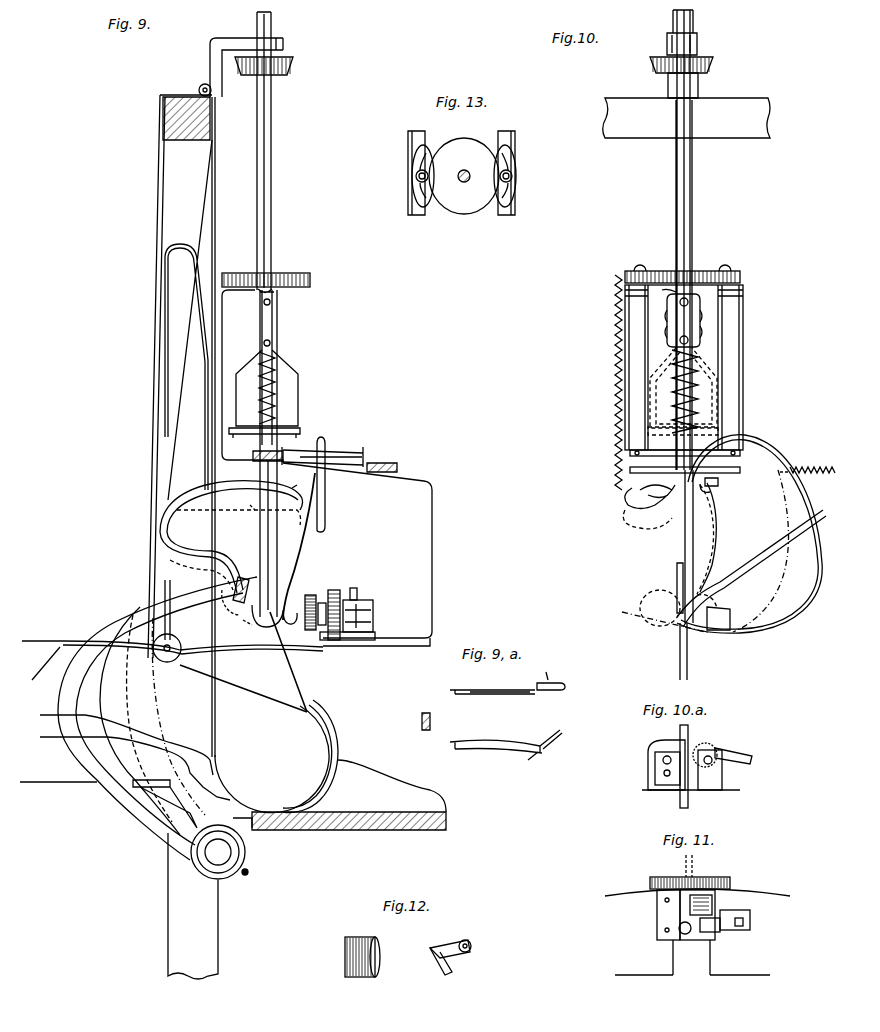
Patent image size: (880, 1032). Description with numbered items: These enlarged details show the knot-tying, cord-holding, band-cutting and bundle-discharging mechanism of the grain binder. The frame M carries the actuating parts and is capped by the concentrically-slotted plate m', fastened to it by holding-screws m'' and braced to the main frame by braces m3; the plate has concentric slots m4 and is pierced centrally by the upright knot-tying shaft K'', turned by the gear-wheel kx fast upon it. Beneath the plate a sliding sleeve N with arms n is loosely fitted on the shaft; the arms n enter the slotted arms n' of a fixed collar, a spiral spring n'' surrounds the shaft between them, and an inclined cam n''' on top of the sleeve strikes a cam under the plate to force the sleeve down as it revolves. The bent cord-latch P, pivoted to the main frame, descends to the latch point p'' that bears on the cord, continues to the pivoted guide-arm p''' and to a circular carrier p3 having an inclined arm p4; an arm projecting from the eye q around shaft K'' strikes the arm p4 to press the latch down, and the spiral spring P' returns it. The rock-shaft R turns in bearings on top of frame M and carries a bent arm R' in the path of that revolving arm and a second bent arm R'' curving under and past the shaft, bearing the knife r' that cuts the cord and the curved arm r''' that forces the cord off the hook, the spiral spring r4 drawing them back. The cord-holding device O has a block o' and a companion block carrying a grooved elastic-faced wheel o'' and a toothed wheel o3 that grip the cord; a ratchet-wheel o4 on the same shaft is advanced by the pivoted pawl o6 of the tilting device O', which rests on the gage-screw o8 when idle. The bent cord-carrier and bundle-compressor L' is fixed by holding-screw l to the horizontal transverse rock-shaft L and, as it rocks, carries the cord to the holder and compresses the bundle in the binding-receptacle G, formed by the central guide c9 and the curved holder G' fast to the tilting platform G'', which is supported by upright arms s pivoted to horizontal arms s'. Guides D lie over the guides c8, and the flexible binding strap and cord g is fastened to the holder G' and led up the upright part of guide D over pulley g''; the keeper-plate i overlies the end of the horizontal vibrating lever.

In FIG. 9, the guides D is at (120, 537).
In FIG. 9, the binding strap and cord g is at (236, 429).
In FIG. 9, the pulley g'' is at (194, 82).
In FIG. 9, the knot-tying shaft K'' is at (276, 151).
In FIG. 10, the knot-tying shaft K'' is at (690, 240).
In FIG. 9, the gear-wheel kx is at (294, 62).
In FIG. 10, the gear-wheel kx is at (713, 64).
In FIG. 9, the concentrically-slotted plate m' is at (279, 274).
In FIG. 13, the concentrically-slotted plate m' is at (464, 176).
In FIG. 10, the concentrically-slotted plate m' is at (694, 273).
In FIG. 9, the braces m3 is at (274, 294).
In FIG. 10, the braces m3 is at (664, 287).
In FIG. 13, the holding-screws m'' is at (465, 173).
In FIG. 13, the concentric slots m4 is at (464, 178).
In FIG. 9, the frame M is at (338, 476).
In FIG. 10, the frame M is at (684, 379).
In FIG. 9, the sliding sleeve N is at (267, 458).
In FIG. 9, the arms n is at (273, 388).
In FIG. 10, the arms n is at (683, 391).
In FIG. 9, the arms n' is at (274, 430).
In FIG. 9, the spiral spring n'' is at (276, 388).
In FIG. 10, the inclined cam n''' is at (694, 314).
In FIG. 9, the rock-shaft R is at (322, 450).
In FIG. 9, the knife r' is at (382, 458).
In FIG. 9, the bent arm R' is at (330, 484).
In FIG. 9, the bent arm R'' is at (301, 546).
In FIG. 10, the bent arm R'' is at (749, 557).
In FIG. 9, the curved arm r''' is at (253, 626).
In FIG. 10, the curved arm r''' is at (728, 617).
In FIG. 10, the spiral spring r4 is at (807, 461).
In FIG. 9, the cord-latch P is at (231, 528).
In FIG. 10, the cord-latch P is at (724, 551).
In FIG. 10, the spiral spring P' is at (609, 382).
In FIG. 9, the circular carrier p3 is at (237, 502).
In FIG. 10, the circular carrier p3 is at (650, 496).
In FIG. 10, the inclined arm p4 is at (670, 568).
In FIG. 9, the latch point p'' is at (303, 492).
In FIG. 9, the pivoted guide-arm p''' is at (241, 602).
In FIG. 10, the eye q is at (719, 483).
In FIG. 9, the keeper-plate i is at (241, 581).
In FIG. 9a, the keeper-plate i is at (546, 716).
In FIG. 9, the cord-carrier and bundle-compressor L' is at (157, 718).
In FIG. 9a, the cord-carrier and bundle-compressor L' is at (482, 712).
In FIG. 9, the rock-shaft L is at (218, 852).
In FIG. 9, the holding-screw l is at (250, 876).
In FIG. 9, the upright arms s is at (193, 651).
In FIG. 9, the horizontal arms s' is at (200, 621).
In FIG. 9, the toothed wheel o3 is at (314, 590).
In FIG. 11, the toothed wheel o3 is at (692, 879).
In FIG. 12, the toothed wheel o3 is at (362, 949).
In FIG. 9, the ratchet-wheel o4 is at (345, 587).
In FIG. 9, the pivoted pawl o6 is at (358, 590).
In FIG. 10a, the pivoted pawl o6 is at (752, 752).
In FIG. 11, the pivoted pawl o6 is at (740, 905).
In FIG. 12, the pivoted pawl o6 is at (443, 969).
In FIG. 11, the gage-screw o8 is at (745, 925).
In FIG. 10a, the block o' is at (710, 772).
In FIG. 11, the grooved elastic-faced wheel o'' is at (687, 938).
In FIG. 10a, the cord-holding device O is at (682, 765).
In FIG. 11, the cord-holding device O is at (692, 915).
In FIG. 11, the tilting device O' is at (735, 906).
In FIG. 12, the tilting device O' is at (450, 941).
In FIG. 9, the binding-receptacle G is at (330, 759).
In FIG. 9, the curved holder G' is at (318, 756).
In FIG. 9, the tilting platform G'' is at (351, 821).
In FIG. 9, the guides c8 is at (108, 793).
In FIG. 9, the central guide c9 is at (135, 757).